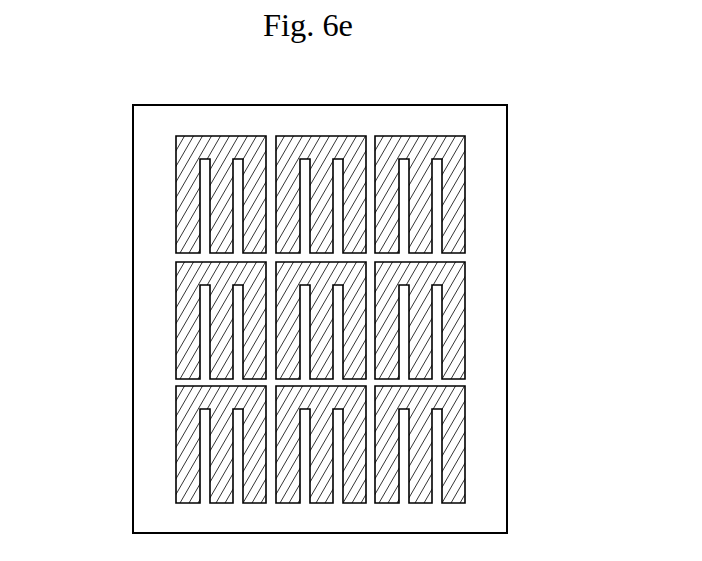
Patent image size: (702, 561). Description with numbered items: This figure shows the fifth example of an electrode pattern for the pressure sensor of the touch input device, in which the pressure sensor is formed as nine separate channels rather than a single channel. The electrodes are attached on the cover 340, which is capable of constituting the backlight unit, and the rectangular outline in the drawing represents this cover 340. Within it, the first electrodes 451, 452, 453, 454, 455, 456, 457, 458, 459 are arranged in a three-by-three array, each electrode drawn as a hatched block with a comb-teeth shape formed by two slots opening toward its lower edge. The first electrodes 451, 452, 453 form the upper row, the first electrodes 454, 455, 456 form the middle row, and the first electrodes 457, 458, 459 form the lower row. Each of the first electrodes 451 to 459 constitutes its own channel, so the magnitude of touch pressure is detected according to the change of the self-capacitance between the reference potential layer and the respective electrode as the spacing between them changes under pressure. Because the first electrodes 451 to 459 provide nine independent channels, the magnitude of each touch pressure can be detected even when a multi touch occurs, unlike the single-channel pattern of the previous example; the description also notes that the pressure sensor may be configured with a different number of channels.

The cover 340 is at (133, 144).
The first electrode 451 is at (190, 210).
The first electrode 452 is at (355, 153).
The first electrode 453 is at (450, 223).
The first electrode 454 is at (192, 345).
The first electrode 455 is at (358, 278).
The first electrode 456 is at (450, 335).
The first electrode 457 is at (190, 437).
The first electrode 458 is at (355, 403).
The first electrode 459 is at (450, 452).